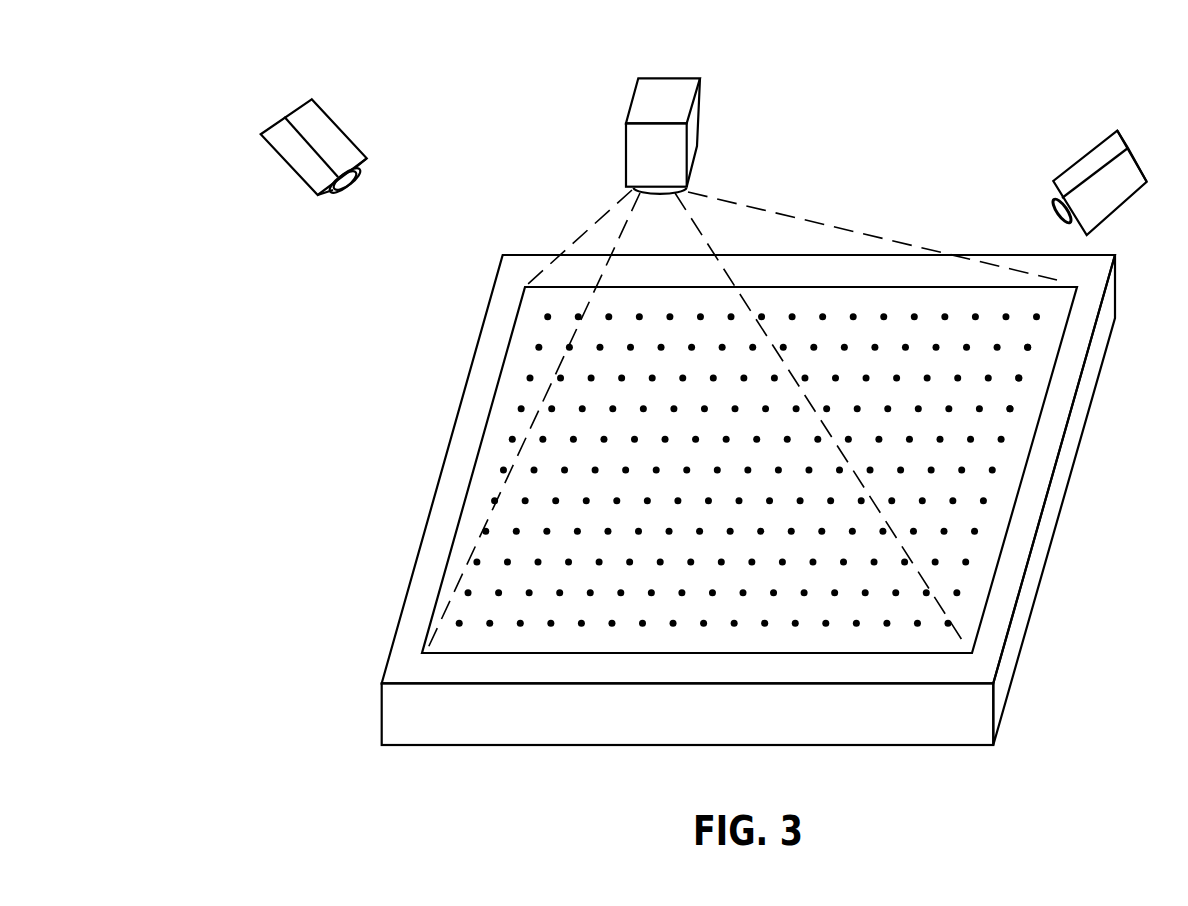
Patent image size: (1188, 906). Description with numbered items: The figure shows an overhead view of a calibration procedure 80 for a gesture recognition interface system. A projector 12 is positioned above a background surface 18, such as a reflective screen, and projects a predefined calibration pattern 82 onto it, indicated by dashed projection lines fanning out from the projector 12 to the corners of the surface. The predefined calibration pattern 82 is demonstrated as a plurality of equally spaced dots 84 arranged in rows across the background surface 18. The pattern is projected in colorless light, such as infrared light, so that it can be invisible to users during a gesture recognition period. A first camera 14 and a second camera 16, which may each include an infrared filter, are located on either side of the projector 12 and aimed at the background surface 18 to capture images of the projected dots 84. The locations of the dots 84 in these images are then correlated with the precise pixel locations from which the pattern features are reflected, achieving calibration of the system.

The calibration procedure 80 is at (265, 43).
The projector 12 is at (703, 103).
The first camera 14 is at (340, 128).
The second camera 16 is at (1127, 142).
The background surface 18 is at (1020, 483).
The predefined calibration pattern 82 is at (512, 382).
The dots 84 is at (1041, 364).